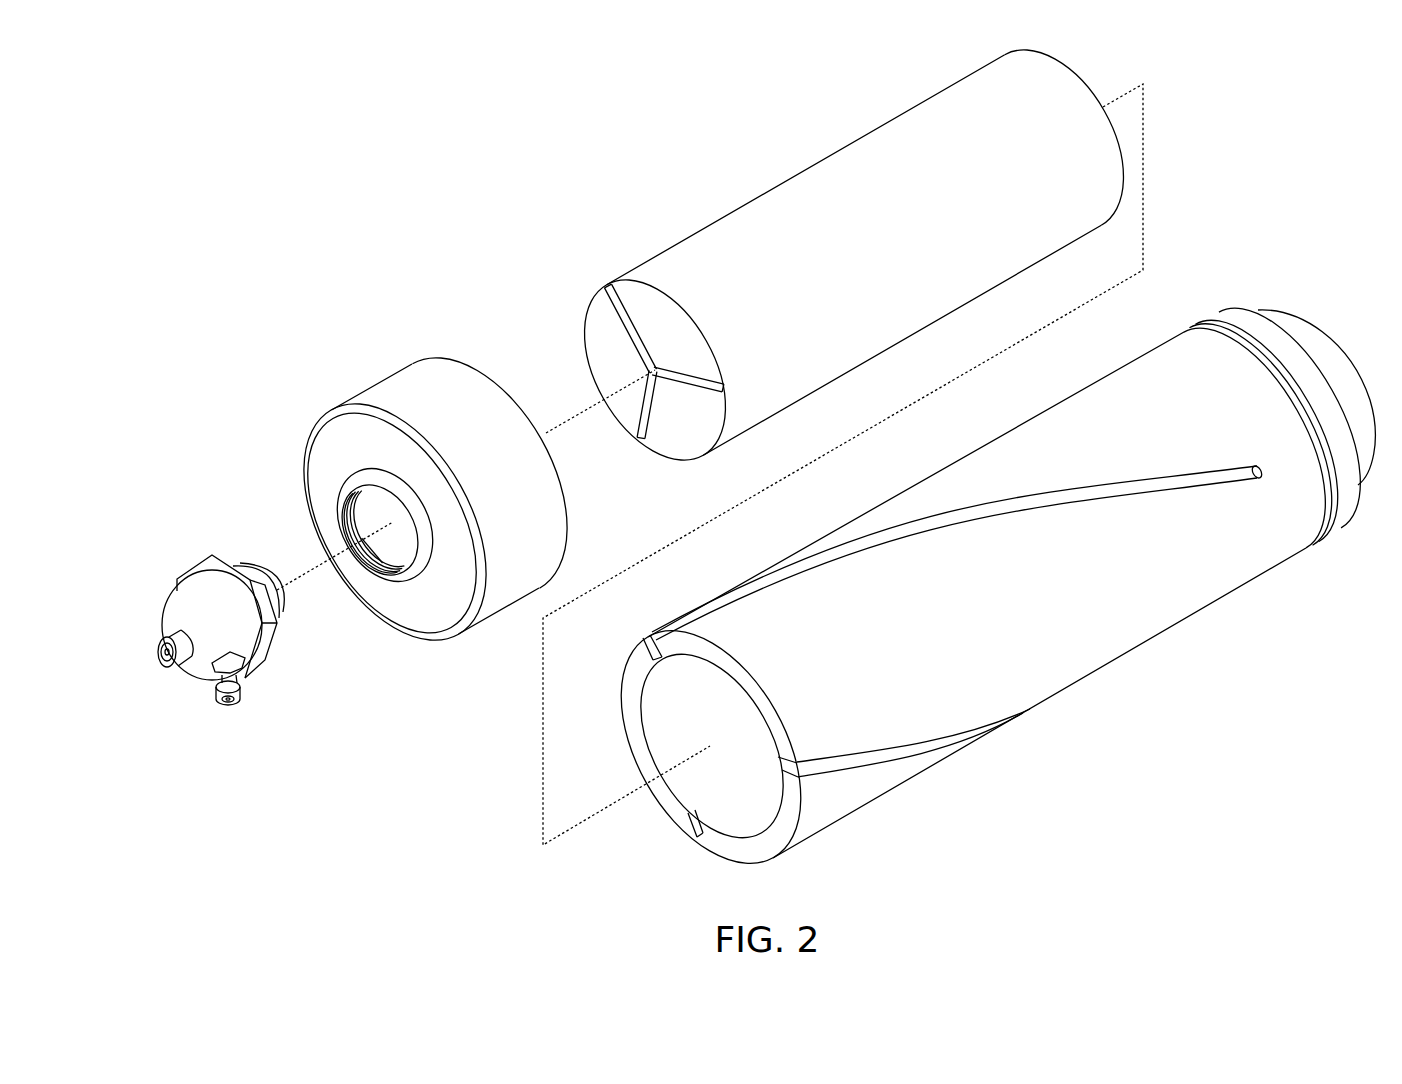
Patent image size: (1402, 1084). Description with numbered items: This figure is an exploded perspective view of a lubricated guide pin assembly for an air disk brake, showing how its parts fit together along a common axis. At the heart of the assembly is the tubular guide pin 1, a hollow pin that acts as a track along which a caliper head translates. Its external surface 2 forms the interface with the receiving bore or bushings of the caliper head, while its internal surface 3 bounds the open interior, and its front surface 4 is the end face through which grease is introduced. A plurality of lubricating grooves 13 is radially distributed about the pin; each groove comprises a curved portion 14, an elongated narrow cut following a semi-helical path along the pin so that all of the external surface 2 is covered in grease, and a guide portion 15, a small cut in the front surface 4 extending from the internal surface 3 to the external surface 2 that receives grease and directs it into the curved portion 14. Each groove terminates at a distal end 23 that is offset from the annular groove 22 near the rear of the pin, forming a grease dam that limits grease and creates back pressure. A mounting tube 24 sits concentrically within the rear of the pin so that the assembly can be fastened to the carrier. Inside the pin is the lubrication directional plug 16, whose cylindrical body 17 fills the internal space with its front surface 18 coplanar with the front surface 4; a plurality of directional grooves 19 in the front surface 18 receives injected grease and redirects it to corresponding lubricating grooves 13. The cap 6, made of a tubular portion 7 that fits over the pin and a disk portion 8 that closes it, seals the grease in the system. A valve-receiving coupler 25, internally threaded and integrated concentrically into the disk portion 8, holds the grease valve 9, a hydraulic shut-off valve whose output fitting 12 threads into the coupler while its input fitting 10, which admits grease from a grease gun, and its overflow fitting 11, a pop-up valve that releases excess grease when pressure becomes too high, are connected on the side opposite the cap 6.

The tubular guide pin 1 is at (988, 596).
The external surface 2 is at (1096, 427).
The internal surface 3 is at (672, 748).
The front surface 4 is at (737, 845).
The cap 6 is at (434, 489).
The tubular portion 7 is at (389, 384).
The disk portion 8 is at (316, 483).
The grease valve 9 is at (261, 660).
The input fitting 10 is at (232, 707).
The overflow fitting 11 is at (173, 667).
The output fitting 12 is at (282, 625).
The lubricating grooves 13 is at (960, 512).
The curved portion 14 is at (1070, 497).
The guide portion 15 is at (643, 643).
The lubrication directional plug 16 is at (853, 255).
The cylindrical body 17 is at (782, 205).
The front surface 18 is at (654, 370).
The directional grooves 19 is at (638, 340).
The annular groove 22 is at (1228, 336).
The distal end 23 is at (1262, 478).
The mounting tube 24 is at (1322, 345).
The valve-receiving coupler 25 is at (413, 550).